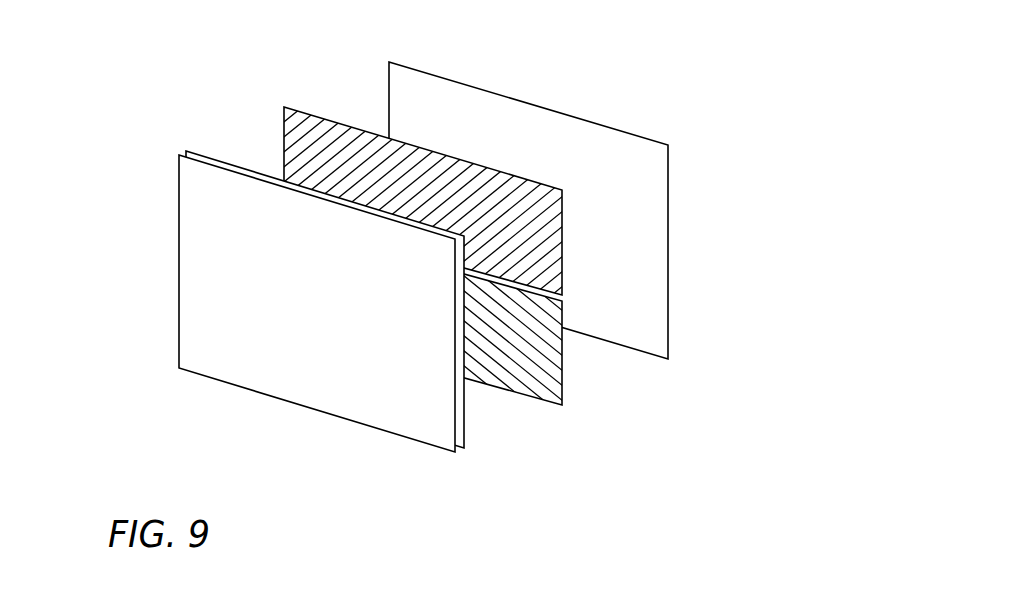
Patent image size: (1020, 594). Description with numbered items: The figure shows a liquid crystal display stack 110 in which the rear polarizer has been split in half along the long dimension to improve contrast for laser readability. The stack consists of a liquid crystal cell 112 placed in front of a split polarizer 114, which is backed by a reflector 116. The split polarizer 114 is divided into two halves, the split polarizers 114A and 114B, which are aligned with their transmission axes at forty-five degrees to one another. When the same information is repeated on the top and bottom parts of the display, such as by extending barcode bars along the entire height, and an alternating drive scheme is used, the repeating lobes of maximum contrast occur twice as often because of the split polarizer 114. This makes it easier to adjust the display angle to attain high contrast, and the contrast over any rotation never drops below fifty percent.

The reflective liquid crystal display 110 is at (422, 297).
The liquid crystal cell 112 is at (317, 401).
The split polarizer 114 is at (528, 297).
The split polarizer 114A is at (533, 216).
The split polarizer 114B is at (515, 380).
The reflector 116 is at (670, 360).